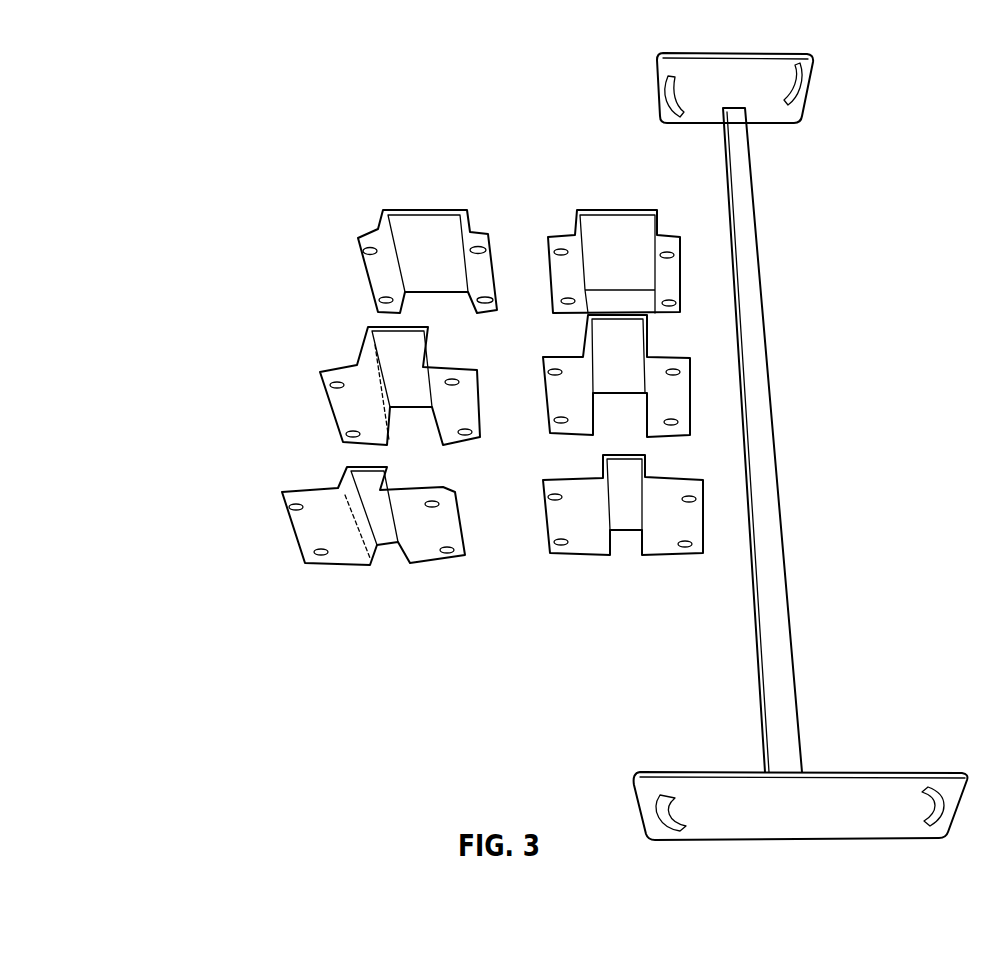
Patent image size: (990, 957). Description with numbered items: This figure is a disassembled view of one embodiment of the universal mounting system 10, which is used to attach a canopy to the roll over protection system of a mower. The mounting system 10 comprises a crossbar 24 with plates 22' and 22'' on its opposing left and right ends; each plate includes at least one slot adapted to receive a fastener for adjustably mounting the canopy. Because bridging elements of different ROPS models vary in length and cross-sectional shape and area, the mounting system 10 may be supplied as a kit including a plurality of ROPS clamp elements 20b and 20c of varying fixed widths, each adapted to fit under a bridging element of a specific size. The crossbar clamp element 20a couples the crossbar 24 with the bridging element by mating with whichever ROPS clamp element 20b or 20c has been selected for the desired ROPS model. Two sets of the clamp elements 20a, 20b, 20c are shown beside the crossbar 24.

The universal mounting system 10 is at (338, 116).
The crossbar clamp element 20a is at (318, 530).
The ROPS clamp element 20b is at (393, 343).
The ROPS clamp element 20c is at (432, 235).
The plate 22' is at (763, 760).
The plate 22'' is at (789, 113).
The crossbar 24 is at (766, 373).